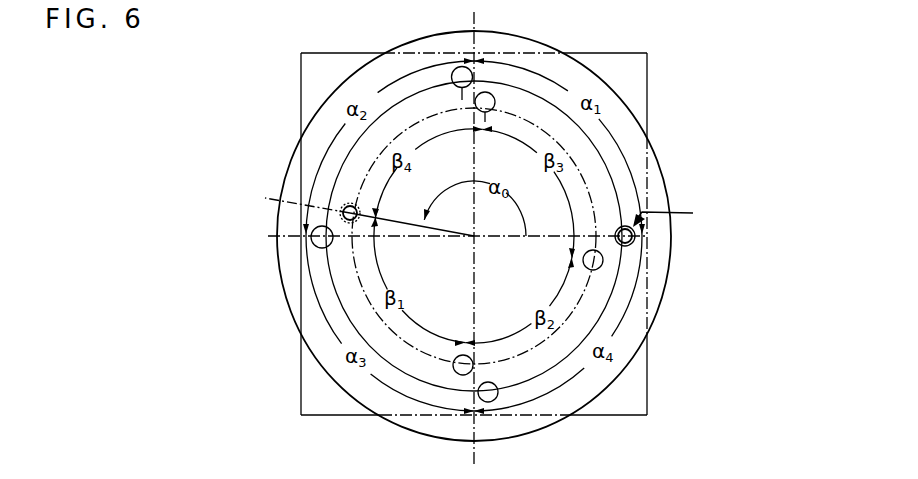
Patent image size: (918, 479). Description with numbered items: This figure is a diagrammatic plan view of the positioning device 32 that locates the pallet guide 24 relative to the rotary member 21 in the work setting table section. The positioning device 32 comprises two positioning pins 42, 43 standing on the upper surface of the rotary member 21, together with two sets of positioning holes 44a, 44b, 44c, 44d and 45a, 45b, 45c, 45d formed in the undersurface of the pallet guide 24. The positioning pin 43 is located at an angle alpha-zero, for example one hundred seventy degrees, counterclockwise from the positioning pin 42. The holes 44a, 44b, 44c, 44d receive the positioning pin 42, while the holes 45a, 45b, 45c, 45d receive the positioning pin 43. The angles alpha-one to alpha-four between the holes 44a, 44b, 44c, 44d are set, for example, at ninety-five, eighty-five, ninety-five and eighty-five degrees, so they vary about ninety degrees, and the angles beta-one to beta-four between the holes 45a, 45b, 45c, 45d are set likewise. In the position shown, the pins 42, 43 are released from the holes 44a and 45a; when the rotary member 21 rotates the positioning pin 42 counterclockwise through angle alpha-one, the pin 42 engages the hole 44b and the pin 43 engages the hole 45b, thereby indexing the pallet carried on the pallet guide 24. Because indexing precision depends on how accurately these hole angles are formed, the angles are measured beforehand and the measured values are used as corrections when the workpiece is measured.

The rotary member 21 is at (566, 54).
The pallet guide 24 is at (648, 85).
The positioning device 32 is at (677, 214).
The positioning pin 42 is at (632, 238).
The positioning pin 43 is at (341, 214).
The positioning hole 44a is at (636, 232).
The positioning hole 44b is at (473, 80).
The positioning hole 44c is at (311, 242).
The positioning hole 44d is at (483, 401).
The positioning hole 45a is at (343, 208).
The positioning hole 45b is at (461, 374).
The positioning hole 45c is at (602, 268).
The positioning hole 45d is at (497, 98).